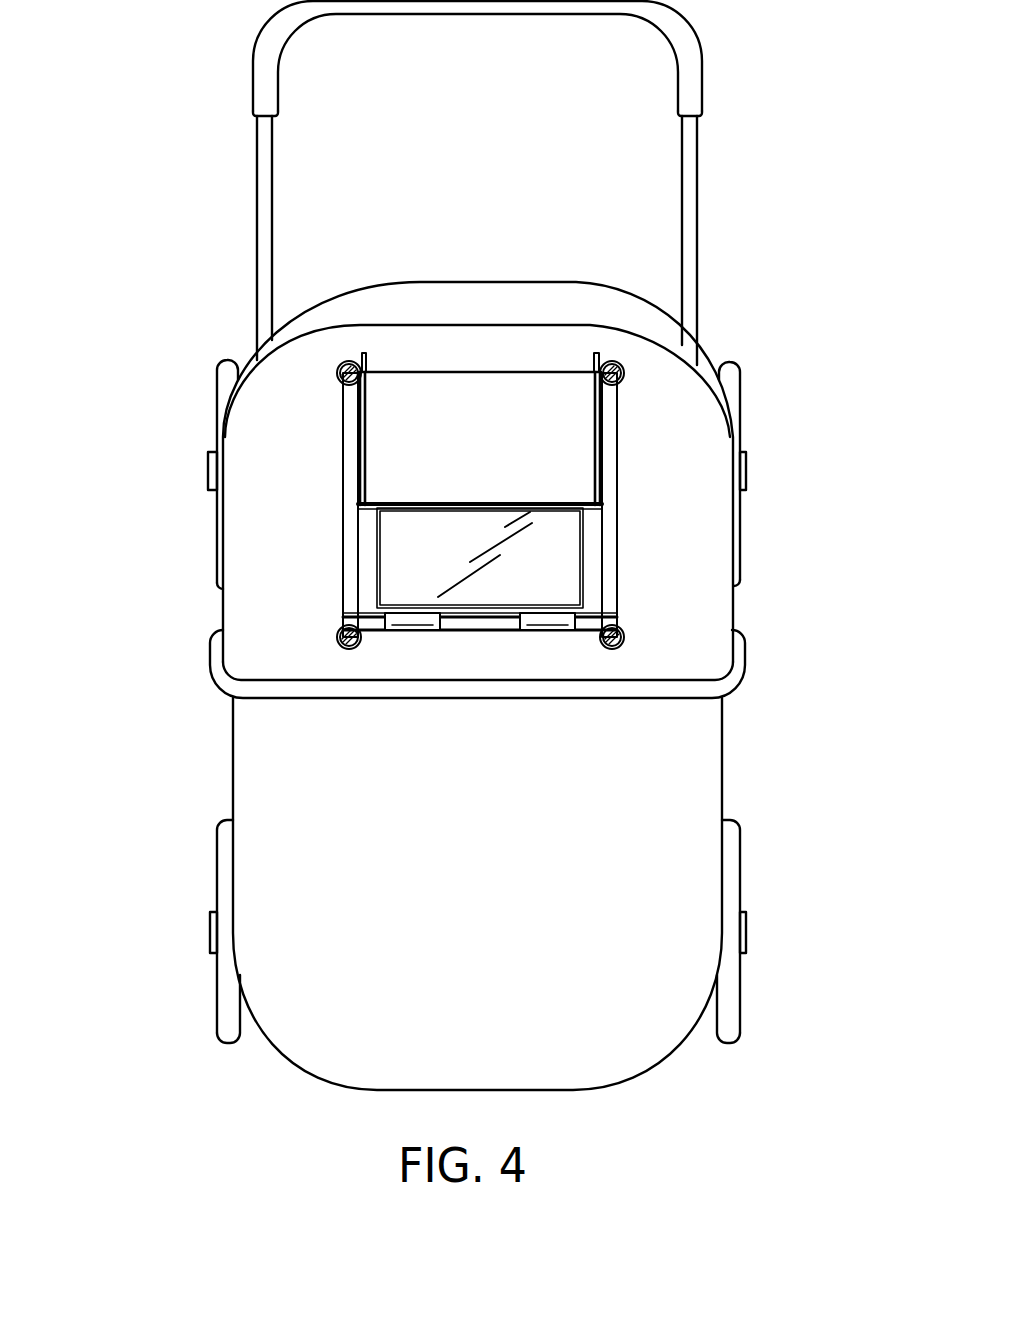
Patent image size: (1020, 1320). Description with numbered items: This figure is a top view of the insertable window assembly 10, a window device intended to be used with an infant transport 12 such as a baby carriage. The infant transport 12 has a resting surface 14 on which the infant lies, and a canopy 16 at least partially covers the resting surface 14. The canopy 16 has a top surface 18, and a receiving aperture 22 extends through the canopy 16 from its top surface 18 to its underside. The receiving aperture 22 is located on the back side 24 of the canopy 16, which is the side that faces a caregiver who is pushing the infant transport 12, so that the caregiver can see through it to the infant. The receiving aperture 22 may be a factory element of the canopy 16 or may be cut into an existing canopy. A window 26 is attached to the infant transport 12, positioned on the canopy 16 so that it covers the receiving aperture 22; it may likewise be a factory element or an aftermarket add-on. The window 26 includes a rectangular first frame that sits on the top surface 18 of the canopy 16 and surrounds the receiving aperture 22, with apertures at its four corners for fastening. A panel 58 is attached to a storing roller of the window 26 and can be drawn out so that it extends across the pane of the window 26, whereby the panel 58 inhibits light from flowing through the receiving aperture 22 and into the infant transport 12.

The insertable window assembly 10 is at (127, 362).
The infant transport 12 is at (212, 557).
The resting surface 14 is at (400, 765).
The canopy 16 is at (700, 538).
The top surface 18 is at (652, 420).
The receiving aperture 22 is at (618, 560).
The back side 24 is at (553, 323).
The window 26 is at (623, 622).
The panel 58 is at (417, 407).